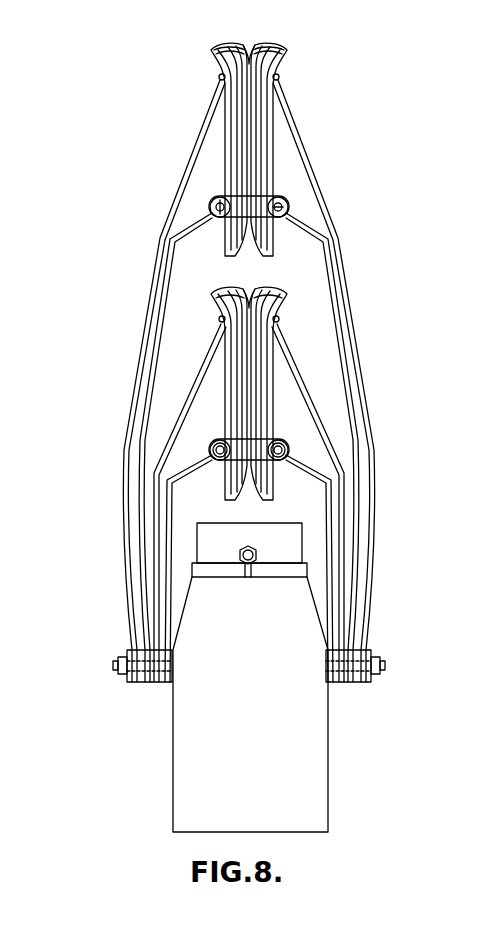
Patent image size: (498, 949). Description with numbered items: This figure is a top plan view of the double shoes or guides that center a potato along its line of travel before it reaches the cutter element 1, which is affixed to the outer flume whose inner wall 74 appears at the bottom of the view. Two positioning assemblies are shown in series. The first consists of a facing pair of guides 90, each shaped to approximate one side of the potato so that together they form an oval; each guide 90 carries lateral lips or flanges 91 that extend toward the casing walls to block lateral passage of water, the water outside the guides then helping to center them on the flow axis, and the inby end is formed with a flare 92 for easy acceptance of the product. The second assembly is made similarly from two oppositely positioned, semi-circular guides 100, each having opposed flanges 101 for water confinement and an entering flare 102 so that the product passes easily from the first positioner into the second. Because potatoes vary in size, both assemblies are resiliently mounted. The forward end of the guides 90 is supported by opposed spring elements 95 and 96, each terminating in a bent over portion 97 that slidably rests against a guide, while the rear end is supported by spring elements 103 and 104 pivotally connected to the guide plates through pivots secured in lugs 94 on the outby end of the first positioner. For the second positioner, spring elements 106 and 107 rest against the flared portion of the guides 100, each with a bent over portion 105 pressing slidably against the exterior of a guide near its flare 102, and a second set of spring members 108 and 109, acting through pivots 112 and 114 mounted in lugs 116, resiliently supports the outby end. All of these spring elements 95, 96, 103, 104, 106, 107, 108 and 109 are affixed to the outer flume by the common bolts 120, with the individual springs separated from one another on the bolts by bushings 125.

The cutter element 1 is at (273, 531).
The inner wall of the outer flume 74 is at (257, 767).
The guide 90 is at (267, 160).
The lateral lip or flange 91 is at (262, 73).
The flare 92 is at (221, 52).
The lug 94 is at (274, 198).
The spring element 95 is at (336, 197).
The spring element 96 is at (159, 238).
The bent over portion 97 is at (217, 79).
The guide 100 is at (267, 418).
The flange 101 is at (243, 381).
The entering flare or flange 102 is at (273, 291).
The spring element 103 is at (347, 307).
The spring element 104 is at (153, 348).
The bent over portion 105 is at (220, 314).
The spring element 106 is at (298, 375).
The spring element 107 is at (200, 380).
The spring member 108 is at (333, 496).
The spring member 109 is at (172, 505).
The pivot 112 is at (289, 450).
The pivot 114 is at (210, 450).
The lug 116 is at (268, 441).
The bolt 120 is at (117, 664).
The bushing 125 is at (361, 683).